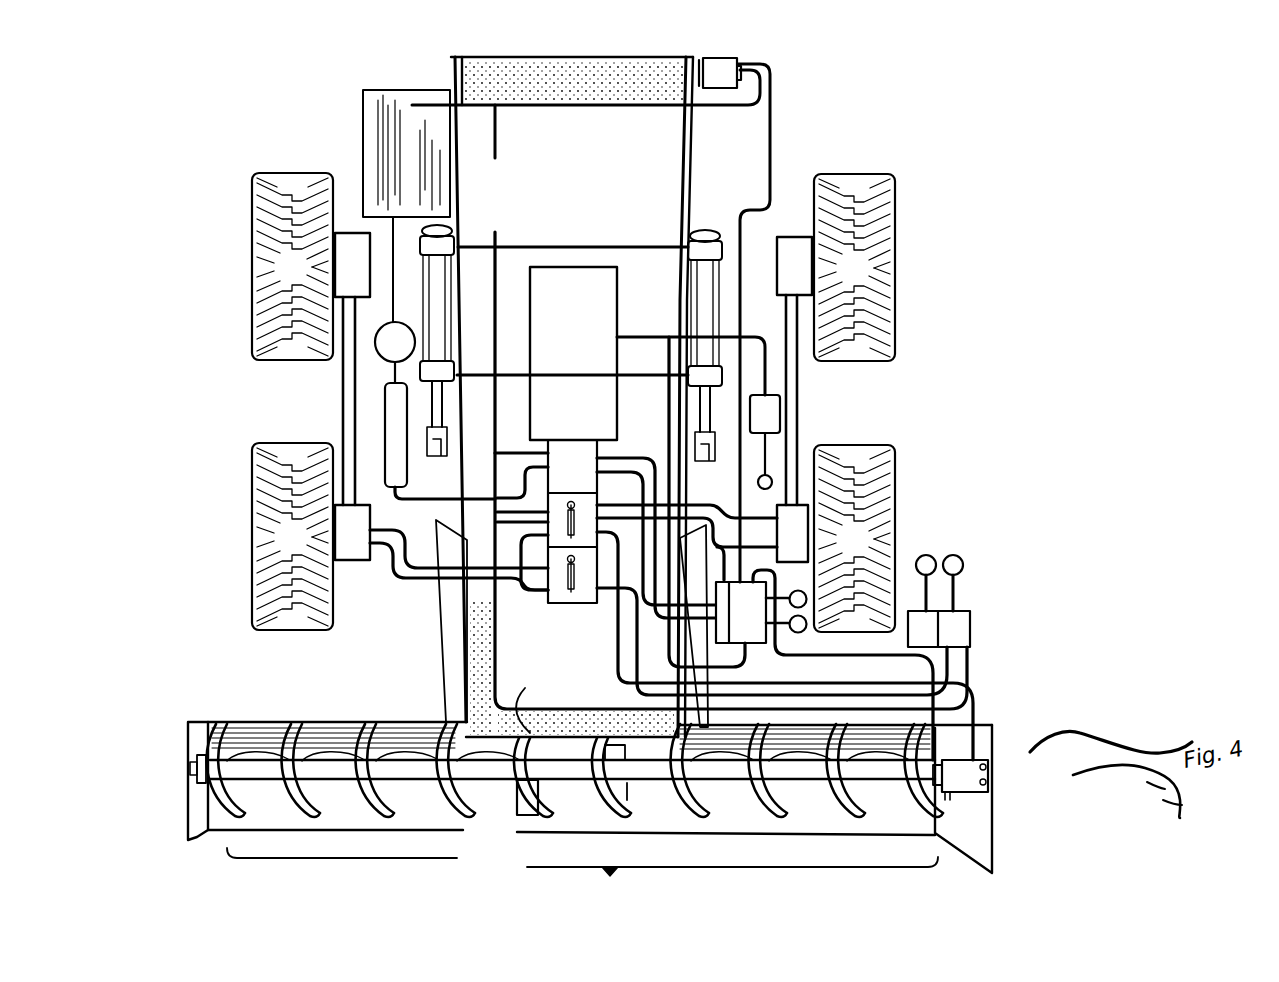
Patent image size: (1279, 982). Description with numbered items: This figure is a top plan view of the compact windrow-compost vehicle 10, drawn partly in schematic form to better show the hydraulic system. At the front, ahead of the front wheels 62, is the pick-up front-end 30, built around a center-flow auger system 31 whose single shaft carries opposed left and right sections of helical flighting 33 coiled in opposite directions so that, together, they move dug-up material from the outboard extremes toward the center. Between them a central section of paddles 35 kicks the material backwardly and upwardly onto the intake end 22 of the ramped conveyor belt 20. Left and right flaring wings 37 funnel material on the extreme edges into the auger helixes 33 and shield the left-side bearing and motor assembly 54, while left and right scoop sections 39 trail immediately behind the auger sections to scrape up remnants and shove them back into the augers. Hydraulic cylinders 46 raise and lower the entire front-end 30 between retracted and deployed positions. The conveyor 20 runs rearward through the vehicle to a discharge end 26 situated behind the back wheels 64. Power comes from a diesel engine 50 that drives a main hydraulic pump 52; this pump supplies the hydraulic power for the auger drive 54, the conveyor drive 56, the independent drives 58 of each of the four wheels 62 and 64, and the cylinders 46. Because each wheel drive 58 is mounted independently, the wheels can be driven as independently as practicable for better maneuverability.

The compact windrow-compost vehicle 10 is at (178, 119).
The ramped conveyor belt 20 is at (548, 698).
The intake end 22 is at (548, 698).
The discharge end 26 is at (576, 60).
The pick-up front-end 30 is at (155, 731).
The center-flow auger system 31 is at (582, 877).
The helical flighting 33 is at (264, 797).
The paddles 35 is at (520, 810).
The flaring wings 37 is at (196, 840).
The scoop sections 39 is at (318, 726).
The hydraulic cylinders 46 is at (452, 240).
The diesel engine 50 is at (586, 344).
The main hydraulic pump 52 is at (586, 484).
The auger drive 54 is at (960, 797).
The conveyor drive 56 is at (717, 68).
The wheel drives 58 is at (338, 270).
The front wheels 62 is at (252, 459).
The back wheels 64 is at (252, 197).